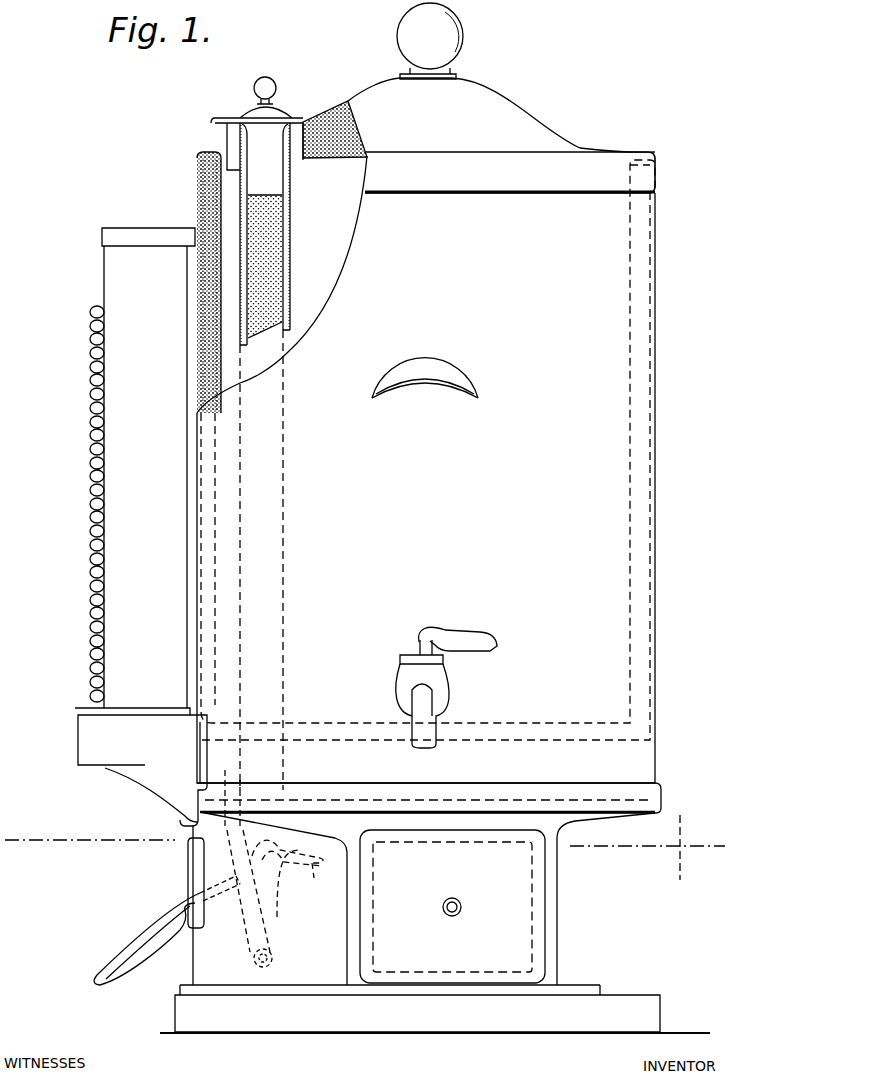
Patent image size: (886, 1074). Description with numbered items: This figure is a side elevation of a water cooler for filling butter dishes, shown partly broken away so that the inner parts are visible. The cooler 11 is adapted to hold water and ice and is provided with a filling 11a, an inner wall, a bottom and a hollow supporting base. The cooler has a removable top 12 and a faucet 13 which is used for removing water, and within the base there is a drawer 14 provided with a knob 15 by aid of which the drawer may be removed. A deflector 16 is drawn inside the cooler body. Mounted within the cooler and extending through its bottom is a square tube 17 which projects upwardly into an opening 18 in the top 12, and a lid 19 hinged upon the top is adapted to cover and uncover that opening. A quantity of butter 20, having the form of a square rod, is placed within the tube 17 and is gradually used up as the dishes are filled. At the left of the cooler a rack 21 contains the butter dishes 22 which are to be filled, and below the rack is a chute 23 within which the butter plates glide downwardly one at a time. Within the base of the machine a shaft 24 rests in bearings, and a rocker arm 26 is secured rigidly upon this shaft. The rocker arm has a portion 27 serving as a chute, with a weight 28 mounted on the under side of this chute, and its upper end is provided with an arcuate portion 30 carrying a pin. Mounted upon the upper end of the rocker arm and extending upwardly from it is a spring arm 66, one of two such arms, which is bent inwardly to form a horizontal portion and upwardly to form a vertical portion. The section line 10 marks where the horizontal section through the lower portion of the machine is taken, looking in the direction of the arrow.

The section line 10 is at (378, 847).
The cooler 11 is at (197, 211).
The filling 11a is at (632, 1002).
The removable top 12 is at (537, 124).
The faucet 13 is at (440, 672).
The drawer 14 is at (546, 878).
The knob 15 is at (462, 906).
The deflector 16 is at (430, 358).
The square tube 17 is at (285, 293).
The opening 18 is at (292, 153).
The lid 19 is at (284, 116).
The butter 20 is at (266, 254).
The rack 21 is at (118, 270).
The butter dishes 22 is at (97, 328).
The chute 23 is at (145, 787).
The shaft 24 is at (275, 961).
The rocker arm 26 is at (268, 915).
The chute portion 27 is at (172, 908).
The weight 28 is at (130, 975).
The arcuate portion 30 is at (289, 868).
The spring arm 66 is at (250, 853).